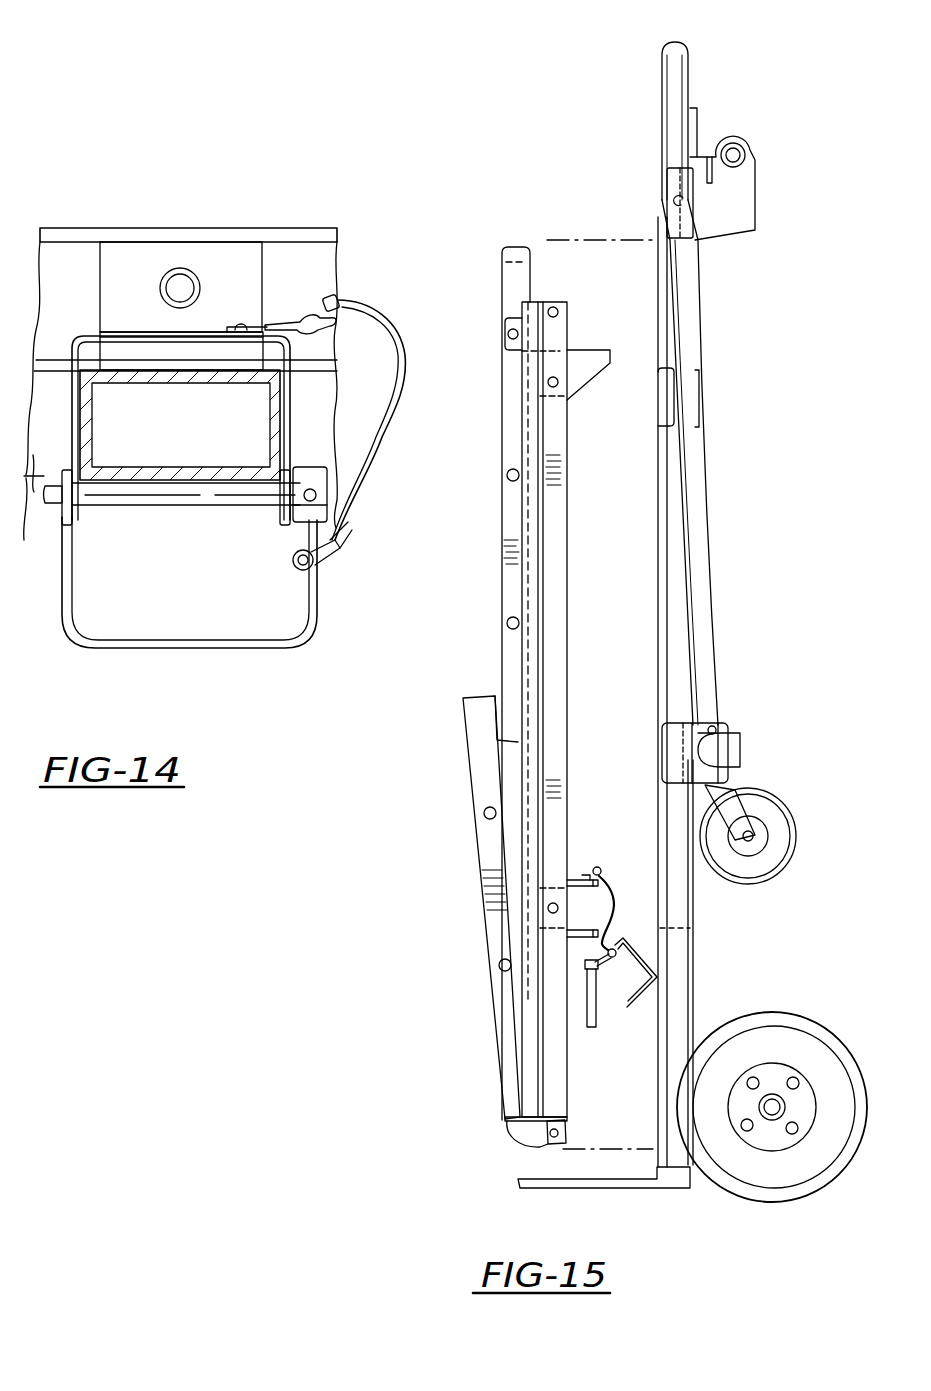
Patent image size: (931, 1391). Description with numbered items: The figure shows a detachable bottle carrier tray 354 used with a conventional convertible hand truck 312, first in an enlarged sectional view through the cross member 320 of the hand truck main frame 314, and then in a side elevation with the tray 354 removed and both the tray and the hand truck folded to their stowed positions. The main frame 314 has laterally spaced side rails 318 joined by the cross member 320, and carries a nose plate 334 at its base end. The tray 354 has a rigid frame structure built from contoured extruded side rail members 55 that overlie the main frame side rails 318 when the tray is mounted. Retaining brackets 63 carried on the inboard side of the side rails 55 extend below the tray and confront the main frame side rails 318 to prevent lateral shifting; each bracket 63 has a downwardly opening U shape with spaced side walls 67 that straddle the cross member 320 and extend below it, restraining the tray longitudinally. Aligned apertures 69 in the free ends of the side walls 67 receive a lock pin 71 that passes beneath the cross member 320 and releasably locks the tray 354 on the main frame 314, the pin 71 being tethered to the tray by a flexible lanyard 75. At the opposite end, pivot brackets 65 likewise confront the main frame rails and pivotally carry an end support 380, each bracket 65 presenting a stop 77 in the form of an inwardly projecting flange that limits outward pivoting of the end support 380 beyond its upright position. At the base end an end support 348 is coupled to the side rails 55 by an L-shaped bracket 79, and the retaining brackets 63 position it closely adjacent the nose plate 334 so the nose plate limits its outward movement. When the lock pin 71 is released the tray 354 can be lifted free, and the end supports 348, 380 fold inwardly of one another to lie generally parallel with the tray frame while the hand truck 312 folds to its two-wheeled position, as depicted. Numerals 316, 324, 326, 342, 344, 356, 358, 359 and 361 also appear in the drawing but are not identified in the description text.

In FIG. 14, the side rail members 55 is at (58, 230).
In FIG. 14, the retaining brackets 63 is at (160, 255).
In FIG. 15, the retaining brackets 63 is at (585, 857).
In FIG. 15, the pivot brackets 65 is at (601, 257).
In FIG. 14, the side walls 67 is at (72, 393).
In FIG. 15, the side walls 67 is at (584, 876).
In FIG. 14, the apertures 69 is at (78, 515).
In FIG. 14, the lock pin 71 is at (205, 500).
In FIG. 15, the lock pin 71 is at (598, 1020).
In FIG. 14, the flexible lanyard 75 is at (405, 352).
In FIG. 15, the flexible lanyard 75 is at (616, 897).
In FIG. 15, the stop 77 is at (585, 351).
In FIG. 15, the L-shaped bracket 79 is at (512, 1128).
In FIG. 15, the convertible hand truck 312 is at (724, 110).
In FIG. 15, the main frame 314 is at (682, 589).
In FIG. 15, the frame upright 316 is at (712, 522).
In FIG. 14, the side rails 318 is at (34, 480).
In FIG. 14, the cross member 320 is at (160, 478).
In FIG. 15, the cross member 320 is at (680, 925).
In FIG. 15, the main wheel 324 is at (778, 1013).
In FIG. 15, the wheel hub 326 is at (772, 1097).
In FIG. 15, the nose plate 334 is at (583, 1190).
In FIG. 15, the caster mount 342 is at (735, 750).
In FIG. 15, the caster wheel 344 is at (776, 790).
In FIG. 15, the end support 348 is at (476, 880).
In FIG. 15, the bottle carrier tray 354 is at (527, 226).
In FIG. 15, the rail 356 is at (569, 490).
In FIG. 15, the hidden edge 358 is at (529, 444).
In FIG. 15, the lower block 359 is at (522, 1142).
In FIG. 15, the post top 361 is at (502, 247).
In FIG. 15, the end support 380 is at (505, 497).